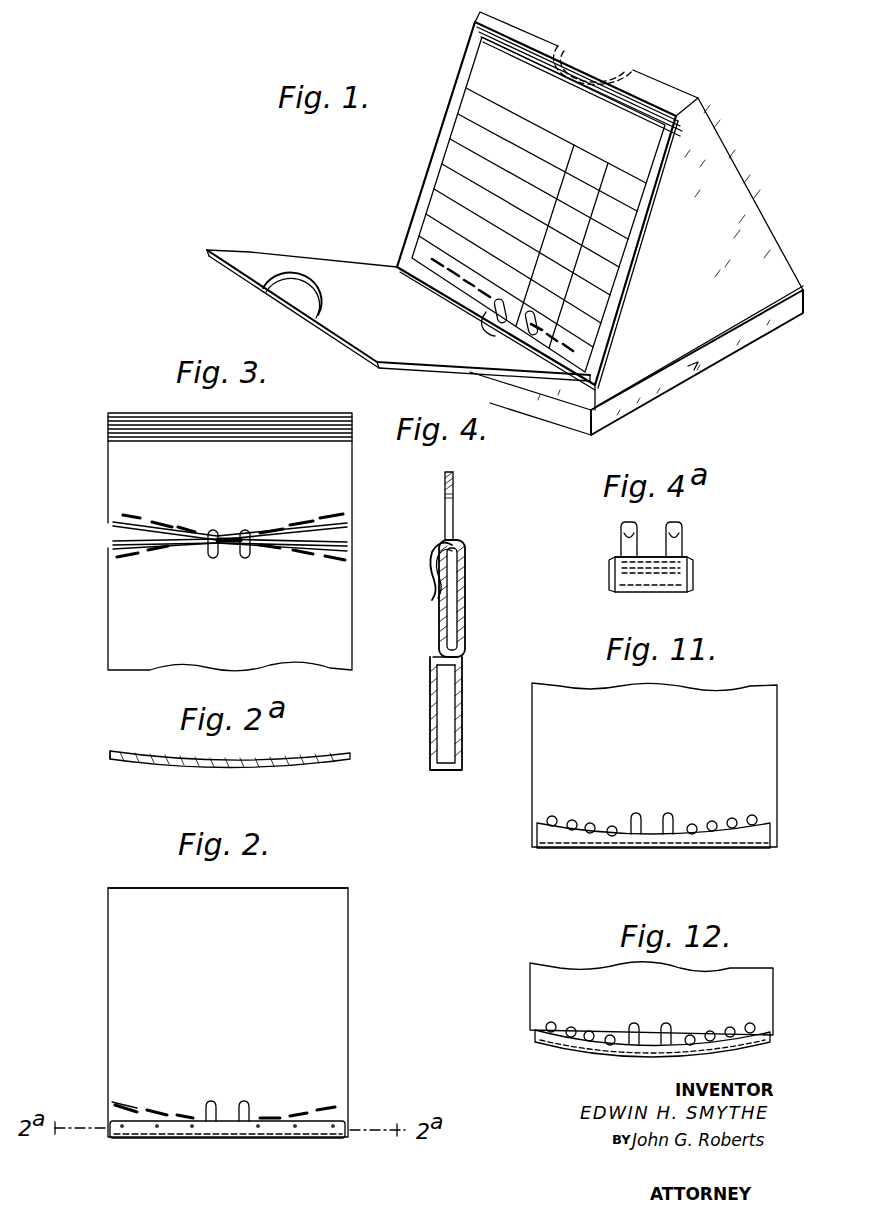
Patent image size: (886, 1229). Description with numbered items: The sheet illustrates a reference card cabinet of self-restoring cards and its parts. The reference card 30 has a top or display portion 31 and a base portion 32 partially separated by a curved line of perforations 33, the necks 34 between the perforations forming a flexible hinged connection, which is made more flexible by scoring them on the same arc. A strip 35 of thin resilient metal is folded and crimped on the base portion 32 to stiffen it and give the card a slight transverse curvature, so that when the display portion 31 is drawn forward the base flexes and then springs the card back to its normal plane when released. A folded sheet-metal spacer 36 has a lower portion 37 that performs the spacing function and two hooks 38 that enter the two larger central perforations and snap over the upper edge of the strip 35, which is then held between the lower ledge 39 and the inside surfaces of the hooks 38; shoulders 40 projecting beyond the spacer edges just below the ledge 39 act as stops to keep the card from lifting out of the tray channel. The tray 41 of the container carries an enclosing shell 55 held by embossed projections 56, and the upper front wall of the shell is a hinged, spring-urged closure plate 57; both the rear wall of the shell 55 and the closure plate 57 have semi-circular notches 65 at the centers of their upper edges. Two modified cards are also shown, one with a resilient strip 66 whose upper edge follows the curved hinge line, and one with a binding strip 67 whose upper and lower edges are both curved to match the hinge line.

In FIG. 1, the reference card 30 is at (462, 188).
In FIG. 2, the reference card 30 is at (107, 905).
In FIG. 1, the display portion 31 is at (487, 62).
In FIG. 3, the display portion 31 is at (115, 450).
In FIG. 11, the display portion 31 is at (768, 727).
In FIG. 2, the display portion 31 is at (335, 1001).
In FIG. 12, the display portion 31 is at (768, 985).
In FIG. 3, the base portion 32 is at (349, 524).
In FIG. 2A, the base portion 32 is at (350, 755).
In FIG. 2, the base portion 32 is at (343, 1116).
In FIG. 3, the line of perforations 33 is at (113, 549).
In FIG. 2, the line of perforations 33 is at (325, 1110).
In FIG. 3, the necks 34 is at (145, 548).
In FIG. 2, the necks 34 is at (116, 1112).
In FIG. 3, the strip 35 is at (113, 535).
In FIG. 4, the strip 35 is at (440, 627).
In FIG. 2A, the strip 35 is at (110, 756).
In FIG. 2, the strip 35 is at (125, 1130).
In FIG. 4, the spacer 36 is at (474, 645).
In FIG. 4A, the spacer 36 is at (652, 550).
In FIG. 4, the lower portion of spacer 37 is at (462, 730).
In FIG. 4A, the lower portion of spacer 37 is at (630, 579).
In FIG. 1, the hooks 38 is at (527, 330).
In FIG. 3, the hooks 38 is at (244, 530).
In FIG. 4, the hooks 38 is at (436, 550).
In FIG. 4A, the hooks 38 is at (620, 530).
In FIG. 4, the ledge 39 is at (436, 654).
In FIG. 4A, the ledge 39 is at (680, 548).
In FIG. 4, the shoulders 40 is at (462, 665).
In FIG. 4A, the shoulders 40 is at (612, 560).
In FIG. 1, the tray 41 is at (752, 338).
In FIG. 1, the shell 55 is at (715, 205).
In FIG. 1, the projections 56 is at (690, 365).
In FIG. 1, the closure plate 57 is at (232, 262).
In FIG. 1, the notches 65 is at (604, 52).
In FIG. 11, the strip of resilient material 66 is at (762, 840).
In FIG. 12, the binding strip 67 is at (770, 1040).